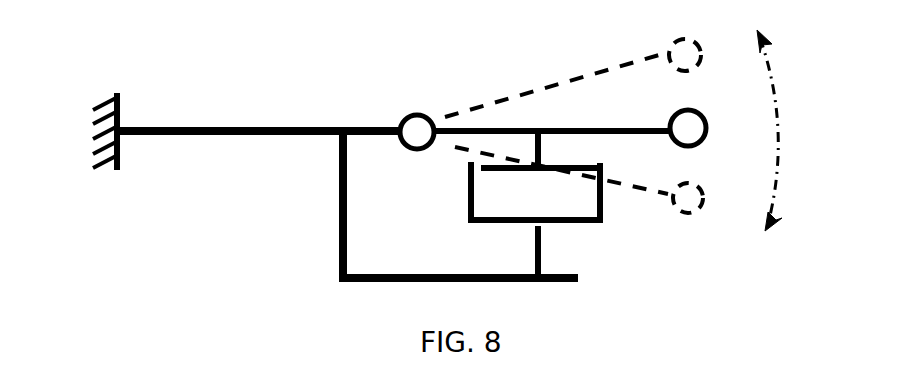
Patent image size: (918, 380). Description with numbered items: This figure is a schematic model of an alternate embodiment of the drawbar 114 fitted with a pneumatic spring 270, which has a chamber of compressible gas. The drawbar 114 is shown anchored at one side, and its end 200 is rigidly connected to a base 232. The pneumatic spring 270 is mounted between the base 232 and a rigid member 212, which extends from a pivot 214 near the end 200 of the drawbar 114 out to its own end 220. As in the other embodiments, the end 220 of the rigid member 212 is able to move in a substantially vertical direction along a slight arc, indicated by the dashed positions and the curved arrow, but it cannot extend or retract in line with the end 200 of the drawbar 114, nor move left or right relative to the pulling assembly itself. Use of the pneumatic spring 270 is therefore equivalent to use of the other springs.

The drawbar 114 is at (137, 135).
The end of drawbar 200 is at (212, 127).
The pivot joint 214 is at (423, 114).
The rigid member 212 is at (595, 127).
The end of rigid member 220 is at (697, 108).
The base 232 is at (575, 275).
The pneumatic spring 270 is at (470, 213).